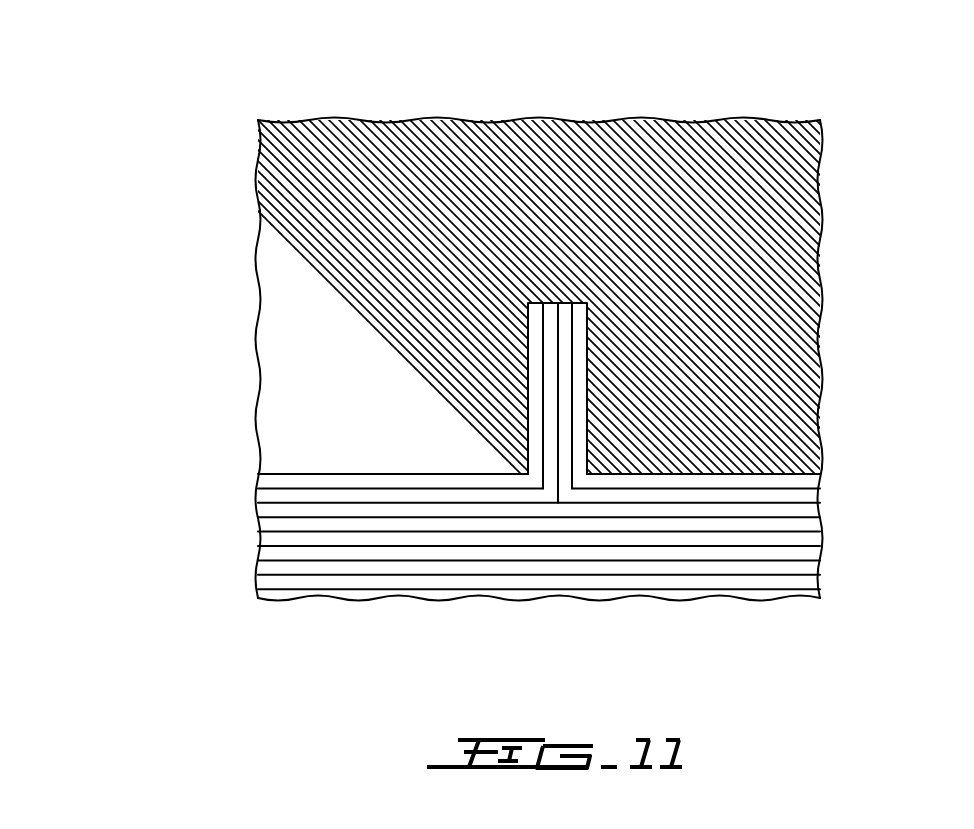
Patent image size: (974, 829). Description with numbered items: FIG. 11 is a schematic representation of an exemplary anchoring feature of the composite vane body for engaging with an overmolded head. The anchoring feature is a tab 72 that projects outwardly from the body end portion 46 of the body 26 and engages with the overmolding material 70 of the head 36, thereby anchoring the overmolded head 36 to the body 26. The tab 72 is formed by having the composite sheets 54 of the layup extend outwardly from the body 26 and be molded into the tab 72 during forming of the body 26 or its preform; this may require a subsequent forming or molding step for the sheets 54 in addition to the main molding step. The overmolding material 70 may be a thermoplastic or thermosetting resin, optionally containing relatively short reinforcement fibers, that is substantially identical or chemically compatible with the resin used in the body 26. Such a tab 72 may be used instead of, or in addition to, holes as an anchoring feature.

The composite sheet 54 is at (585, 303).
The tab 72 is at (516, 371).
The head 36 is at (565, 295).
The overmolding material 70 is at (683, 258).
The body 26 is at (539, 599).
The body end portion 46 is at (562, 553).